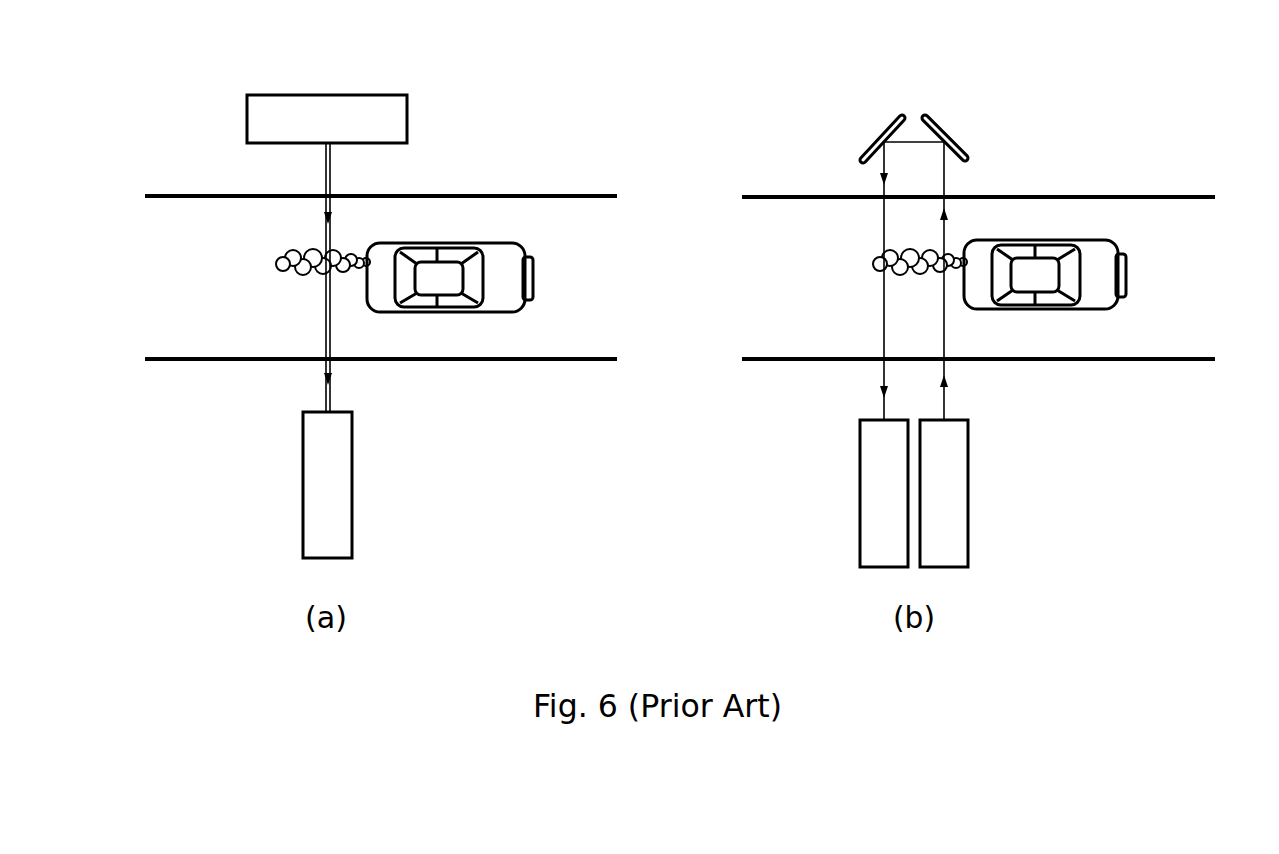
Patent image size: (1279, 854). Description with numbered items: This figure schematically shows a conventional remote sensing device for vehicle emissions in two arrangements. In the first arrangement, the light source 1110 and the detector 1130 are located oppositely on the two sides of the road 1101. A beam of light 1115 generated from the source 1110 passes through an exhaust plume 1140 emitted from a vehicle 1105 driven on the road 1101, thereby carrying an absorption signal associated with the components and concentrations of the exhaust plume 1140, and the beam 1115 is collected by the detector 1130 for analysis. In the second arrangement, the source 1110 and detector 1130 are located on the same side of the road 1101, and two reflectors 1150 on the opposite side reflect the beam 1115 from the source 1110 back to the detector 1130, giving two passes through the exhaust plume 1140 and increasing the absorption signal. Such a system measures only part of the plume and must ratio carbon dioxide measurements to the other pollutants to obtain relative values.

The road 1101 is at (508, 215).
The vehicle 1105 is at (508, 300).
The light source 1110 is at (398, 108).
The beam of light 1115 is at (322, 373).
The detector 1130 is at (353, 500).
The exhaust plume 1140 is at (288, 274).
The reflectors 1150 is at (925, 118).